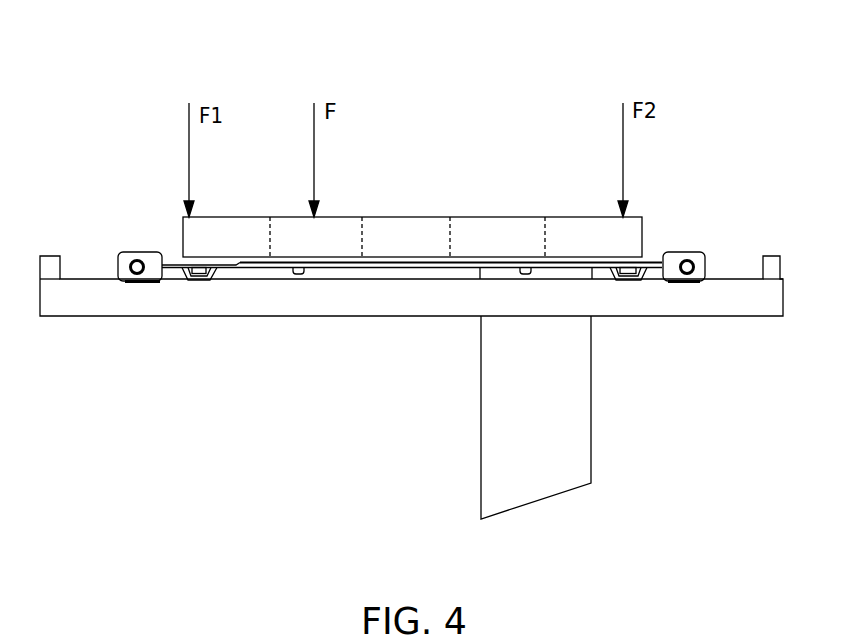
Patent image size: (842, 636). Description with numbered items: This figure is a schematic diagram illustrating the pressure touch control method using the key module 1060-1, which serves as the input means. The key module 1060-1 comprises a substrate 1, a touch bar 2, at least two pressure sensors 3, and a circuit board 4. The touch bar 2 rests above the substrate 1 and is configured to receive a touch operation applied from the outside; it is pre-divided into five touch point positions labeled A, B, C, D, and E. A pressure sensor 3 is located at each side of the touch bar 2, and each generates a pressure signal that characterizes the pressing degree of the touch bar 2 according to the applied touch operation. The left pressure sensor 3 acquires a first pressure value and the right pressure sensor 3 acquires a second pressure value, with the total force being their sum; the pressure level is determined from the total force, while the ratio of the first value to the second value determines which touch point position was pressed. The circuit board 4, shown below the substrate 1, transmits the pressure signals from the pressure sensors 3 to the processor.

The substrate 1 is at (75, 312).
The touch bar 2 is at (418, 232).
The pressure sensor 3 is at (197, 282).
The circuit board 4 is at (508, 398).
The key module 1060-1 is at (278, 448).